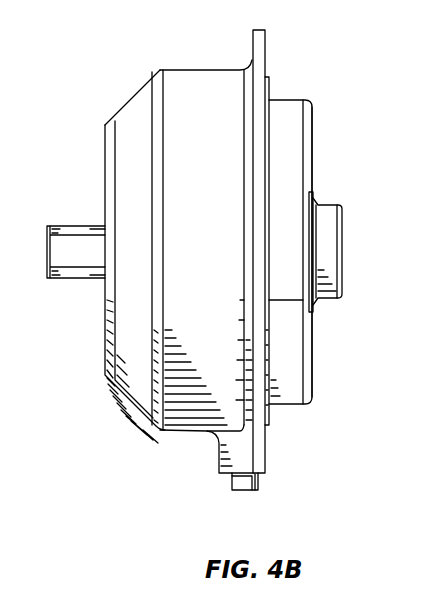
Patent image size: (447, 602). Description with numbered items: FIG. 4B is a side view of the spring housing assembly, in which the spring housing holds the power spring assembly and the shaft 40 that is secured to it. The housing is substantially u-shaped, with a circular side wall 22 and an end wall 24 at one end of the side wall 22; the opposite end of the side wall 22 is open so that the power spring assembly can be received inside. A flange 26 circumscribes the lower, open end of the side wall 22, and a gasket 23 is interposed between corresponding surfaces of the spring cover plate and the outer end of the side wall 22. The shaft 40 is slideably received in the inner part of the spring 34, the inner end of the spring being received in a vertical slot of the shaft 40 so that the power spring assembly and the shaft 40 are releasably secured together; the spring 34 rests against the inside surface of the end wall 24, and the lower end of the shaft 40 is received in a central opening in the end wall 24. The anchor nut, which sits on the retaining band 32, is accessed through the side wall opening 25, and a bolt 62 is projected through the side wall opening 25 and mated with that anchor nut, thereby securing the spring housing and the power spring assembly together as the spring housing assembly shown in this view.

The circular side wall 22 is at (187, 82).
The gasket 23 is at (269, 415).
The end wall 24 is at (130, 120).
The side wall opening 25 is at (216, 478).
The flange 26 is at (258, 28).
The retaining band 32 is at (283, 107).
The spring 34 is at (308, 137).
The shaft 40 is at (333, 253).
The bolt 62 is at (258, 480).